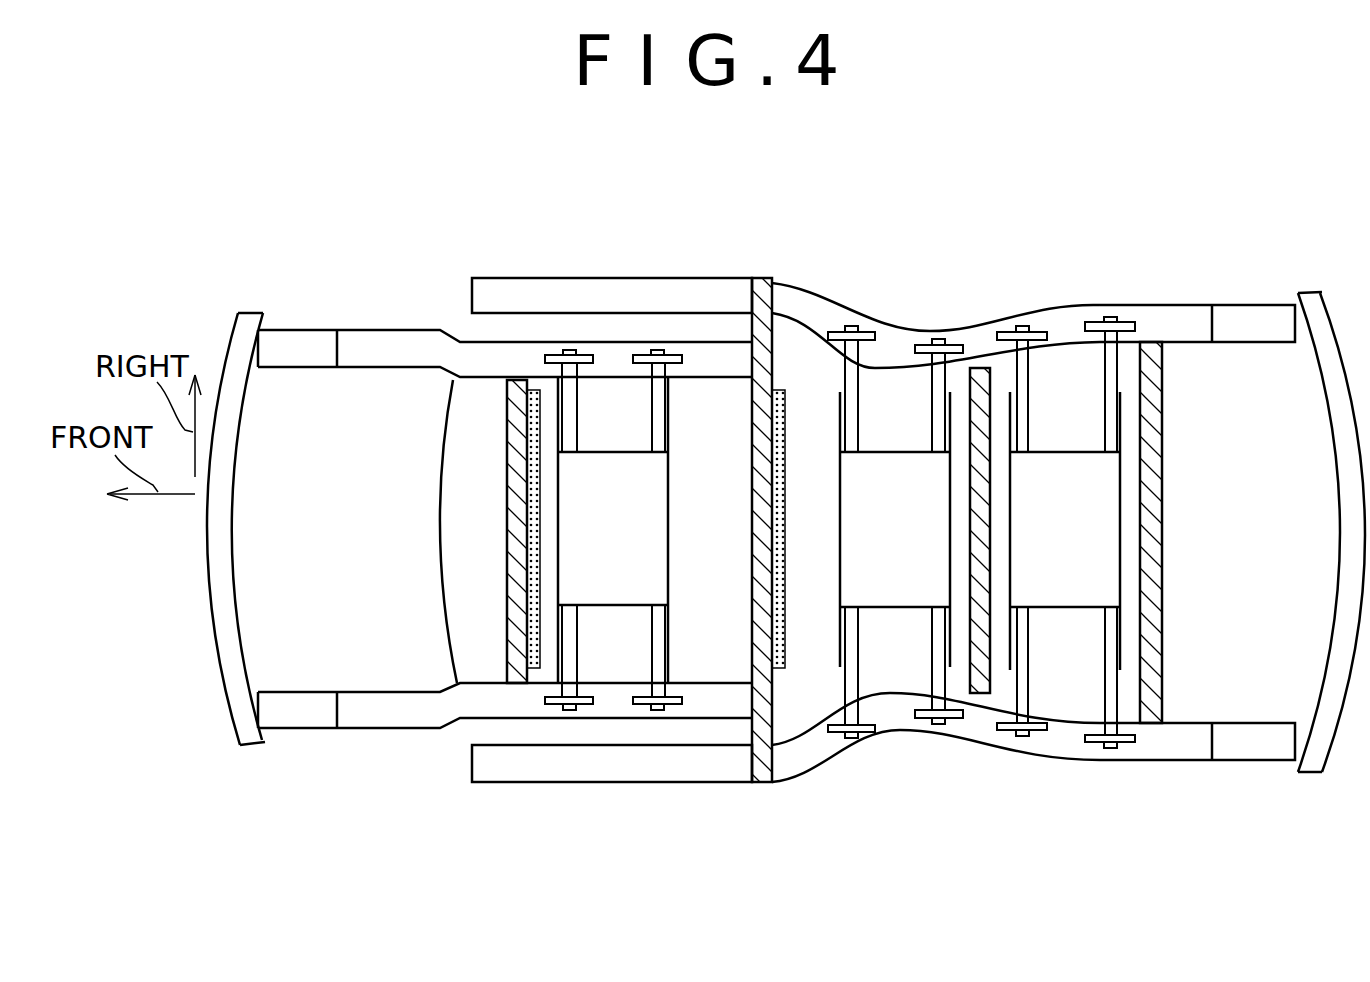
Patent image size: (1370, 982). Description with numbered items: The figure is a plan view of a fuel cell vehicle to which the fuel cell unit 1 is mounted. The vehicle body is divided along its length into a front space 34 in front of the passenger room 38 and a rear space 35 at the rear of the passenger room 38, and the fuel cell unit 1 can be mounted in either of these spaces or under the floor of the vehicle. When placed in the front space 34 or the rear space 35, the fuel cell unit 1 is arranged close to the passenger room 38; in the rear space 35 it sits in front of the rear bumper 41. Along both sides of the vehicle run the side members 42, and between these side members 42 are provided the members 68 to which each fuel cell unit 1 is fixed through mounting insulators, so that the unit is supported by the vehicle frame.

The fuel cell unit 1 is at (628, 502).
The front space 34 is at (363, 480).
The rear space 35 is at (1132, 393).
The passenger room 38 is at (803, 407).
The rear bumper 41 is at (1318, 298).
The side member 42 is at (370, 342).
The member 68 is at (657, 666).